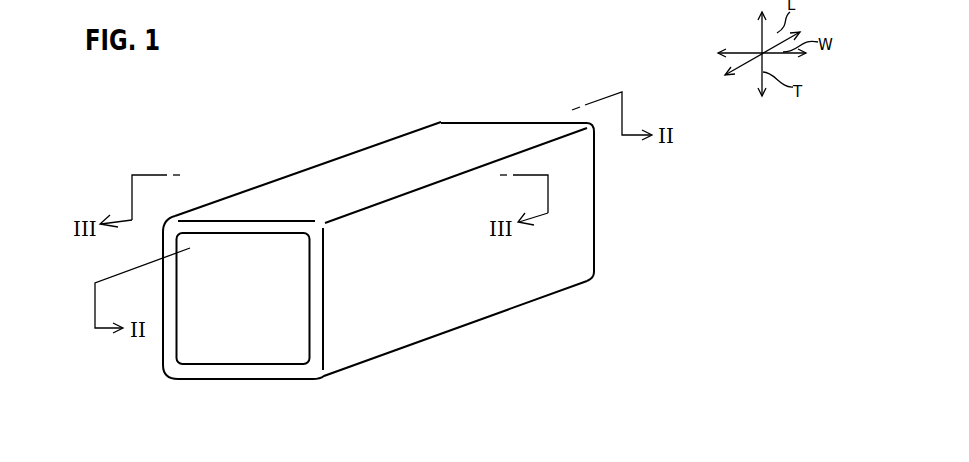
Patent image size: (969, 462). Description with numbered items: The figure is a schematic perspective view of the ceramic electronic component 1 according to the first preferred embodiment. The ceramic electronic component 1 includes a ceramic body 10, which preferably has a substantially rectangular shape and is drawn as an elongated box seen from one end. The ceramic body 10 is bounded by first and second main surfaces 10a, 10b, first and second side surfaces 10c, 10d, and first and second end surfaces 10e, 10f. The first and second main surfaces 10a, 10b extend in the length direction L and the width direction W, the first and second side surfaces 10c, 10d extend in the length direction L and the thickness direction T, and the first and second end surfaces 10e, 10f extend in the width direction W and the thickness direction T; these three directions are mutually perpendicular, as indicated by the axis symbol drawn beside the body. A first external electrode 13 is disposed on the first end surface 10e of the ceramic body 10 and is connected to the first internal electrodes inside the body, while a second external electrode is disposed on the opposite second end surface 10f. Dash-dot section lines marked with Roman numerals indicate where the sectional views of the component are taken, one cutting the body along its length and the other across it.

The ceramic electronic component 1 is at (534, 84).
The ceramic body 10 is at (367, 146).
The first main surface 10a is at (457, 133).
The second main surface 10b is at (400, 348).
The first side surface 10c is at (307, 167).
The second side surface 10d is at (530, 283).
The first end surface 10e is at (268, 377).
The second end surface 10f is at (594, 212).
The first external electrode 13 is at (228, 338).